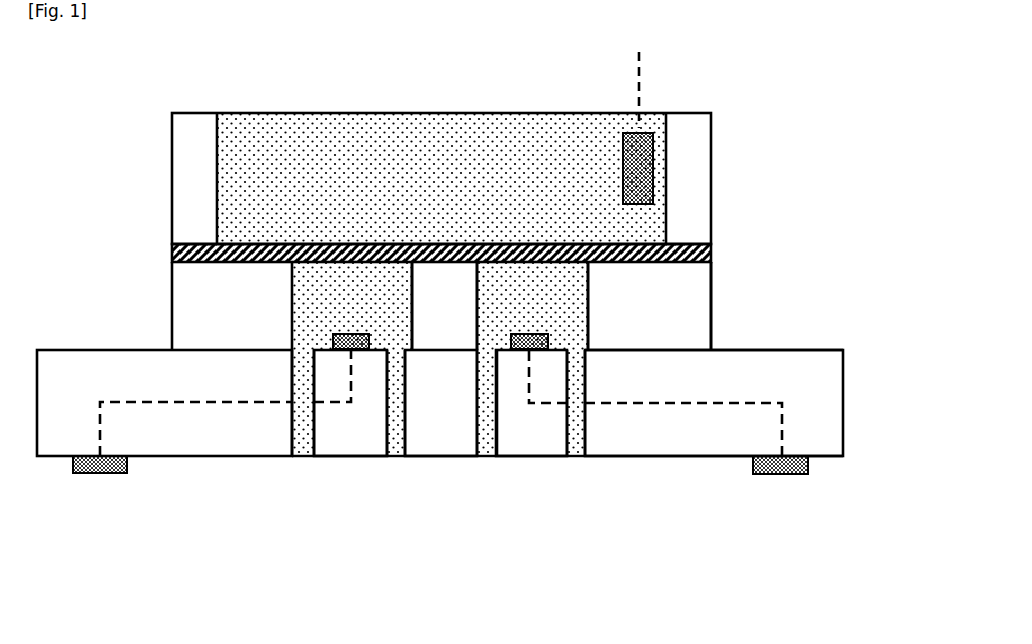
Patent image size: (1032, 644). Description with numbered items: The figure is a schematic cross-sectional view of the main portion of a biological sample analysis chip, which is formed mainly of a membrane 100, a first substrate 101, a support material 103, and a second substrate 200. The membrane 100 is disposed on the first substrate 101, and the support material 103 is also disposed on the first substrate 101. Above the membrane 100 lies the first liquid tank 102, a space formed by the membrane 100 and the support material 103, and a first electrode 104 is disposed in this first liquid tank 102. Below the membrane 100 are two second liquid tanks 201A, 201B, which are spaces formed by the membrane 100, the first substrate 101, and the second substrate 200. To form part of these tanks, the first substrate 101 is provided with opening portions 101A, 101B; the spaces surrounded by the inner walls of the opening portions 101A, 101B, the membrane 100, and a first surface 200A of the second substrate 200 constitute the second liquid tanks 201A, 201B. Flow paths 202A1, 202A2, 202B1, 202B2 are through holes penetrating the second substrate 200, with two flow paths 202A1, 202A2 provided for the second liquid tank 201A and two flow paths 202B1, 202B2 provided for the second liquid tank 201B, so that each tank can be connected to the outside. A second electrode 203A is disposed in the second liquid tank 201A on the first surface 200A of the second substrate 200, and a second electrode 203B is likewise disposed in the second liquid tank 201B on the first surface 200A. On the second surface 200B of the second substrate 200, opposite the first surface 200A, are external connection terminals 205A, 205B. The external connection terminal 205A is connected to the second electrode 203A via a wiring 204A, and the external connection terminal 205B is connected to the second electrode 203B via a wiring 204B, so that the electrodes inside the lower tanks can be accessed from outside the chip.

The membrane 100 is at (677, 252).
The first substrate 101 is at (473, 206).
The opening portion 101A is at (412, 295).
The opening portion 101B is at (588, 295).
The first liquid tank 102 is at (465, 125).
The support material 103 is at (184, 148).
The first electrode 104 is at (648, 128).
The second substrate 200 is at (473, 435).
The first surface 200A is at (811, 351).
The second surface 200B is at (732, 460).
The second liquid tank 201A is at (346, 294).
The second liquid tank 201B is at (532, 301).
The flow path 202A1 is at (307, 451).
The flow path 202A2 is at (397, 448).
The flow path 202B1 is at (486, 448).
The flow path 202B2 is at (575, 448).
The second electrode 203A is at (352, 348).
The second electrode 203B is at (530, 348).
The wiring 204A is at (212, 403).
The wiring 204B is at (677, 406).
The external connection terminal 205A is at (99, 478).
The external connection terminal 205B is at (783, 480).